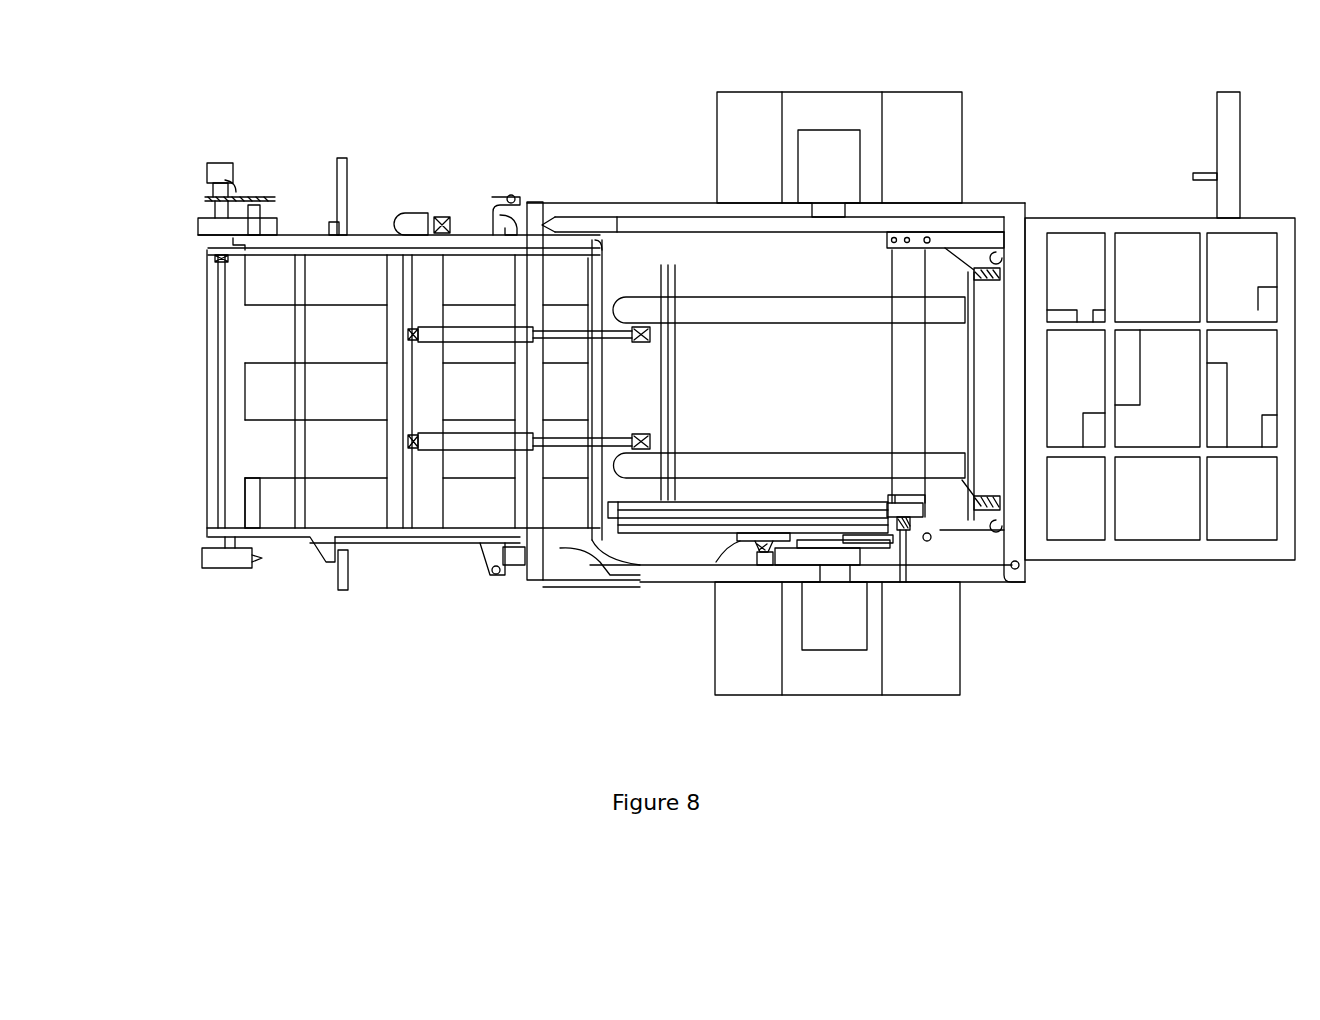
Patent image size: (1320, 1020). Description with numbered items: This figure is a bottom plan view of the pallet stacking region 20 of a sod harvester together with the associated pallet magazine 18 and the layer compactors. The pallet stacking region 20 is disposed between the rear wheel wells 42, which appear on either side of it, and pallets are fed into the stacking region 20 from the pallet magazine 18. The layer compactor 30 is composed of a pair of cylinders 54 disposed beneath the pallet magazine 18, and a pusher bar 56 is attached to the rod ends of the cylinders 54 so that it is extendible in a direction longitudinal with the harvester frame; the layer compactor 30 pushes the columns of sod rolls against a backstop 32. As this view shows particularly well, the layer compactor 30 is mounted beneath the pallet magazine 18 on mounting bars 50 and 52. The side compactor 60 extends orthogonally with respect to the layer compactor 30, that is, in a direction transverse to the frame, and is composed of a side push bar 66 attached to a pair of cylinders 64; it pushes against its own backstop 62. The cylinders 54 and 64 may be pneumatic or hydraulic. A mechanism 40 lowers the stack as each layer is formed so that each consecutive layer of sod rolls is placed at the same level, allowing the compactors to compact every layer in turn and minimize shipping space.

The pallet magazine 18 is at (197, 443).
The sod stacking region 20 is at (787, 375).
The layer compactor 30 is at (680, 393).
The backstop 32 is at (882, 388).
The mechanism 40 is at (972, 348).
The rear wheel wells 42 is at (922, 102).
The mounting bar 50 is at (395, 463).
The mounting bar 52 is at (523, 497).
The cylinders 54 is at (475, 335).
The pusher bar 56 is at (676, 365).
The side compactor 60 is at (656, 535).
The backstop 62 is at (692, 235).
The cylinders 64 is at (903, 530).
The side push bar 66 is at (687, 535).